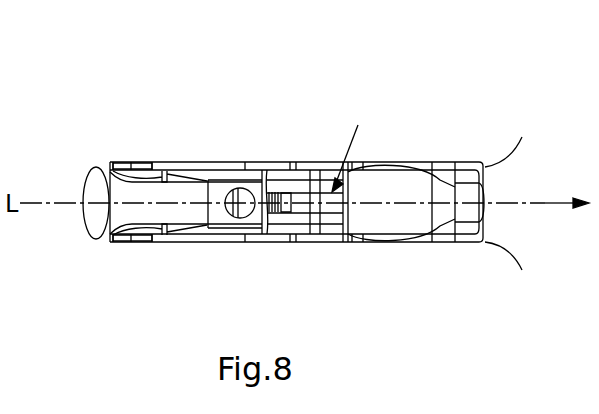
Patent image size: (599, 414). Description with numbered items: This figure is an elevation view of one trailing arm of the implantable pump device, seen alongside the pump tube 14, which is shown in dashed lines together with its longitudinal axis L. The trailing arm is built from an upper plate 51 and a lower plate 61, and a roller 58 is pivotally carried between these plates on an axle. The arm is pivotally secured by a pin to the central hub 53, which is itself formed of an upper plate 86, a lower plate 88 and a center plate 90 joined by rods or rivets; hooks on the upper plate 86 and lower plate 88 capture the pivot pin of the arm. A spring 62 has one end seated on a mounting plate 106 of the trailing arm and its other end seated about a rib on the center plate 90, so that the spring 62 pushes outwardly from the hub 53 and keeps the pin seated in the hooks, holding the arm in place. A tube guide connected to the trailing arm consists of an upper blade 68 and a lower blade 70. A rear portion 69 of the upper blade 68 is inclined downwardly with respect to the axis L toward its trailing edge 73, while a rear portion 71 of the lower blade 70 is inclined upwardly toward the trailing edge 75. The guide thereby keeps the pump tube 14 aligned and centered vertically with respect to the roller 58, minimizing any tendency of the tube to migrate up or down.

The pump tube 14 is at (83, 172).
The upper plate 51 is at (163, 170).
The hub 53 is at (360, 142).
The roller 58 is at (117, 215).
The lower plate 61 is at (172, 239).
The spring 62 is at (280, 172).
The upper blade 68 is at (263, 178).
The rear portion 69 is at (203, 178).
The lower blade 70 is at (252, 236).
The rear portion 71 is at (203, 230).
The trailing edge 73 is at (115, 161).
The trailing edge 75 is at (115, 237).
The upper plate 86 is at (318, 172).
The lower plate 88 is at (298, 227).
The center plate 90 is at (292, 207).
The mounting plate 106 is at (223, 188).